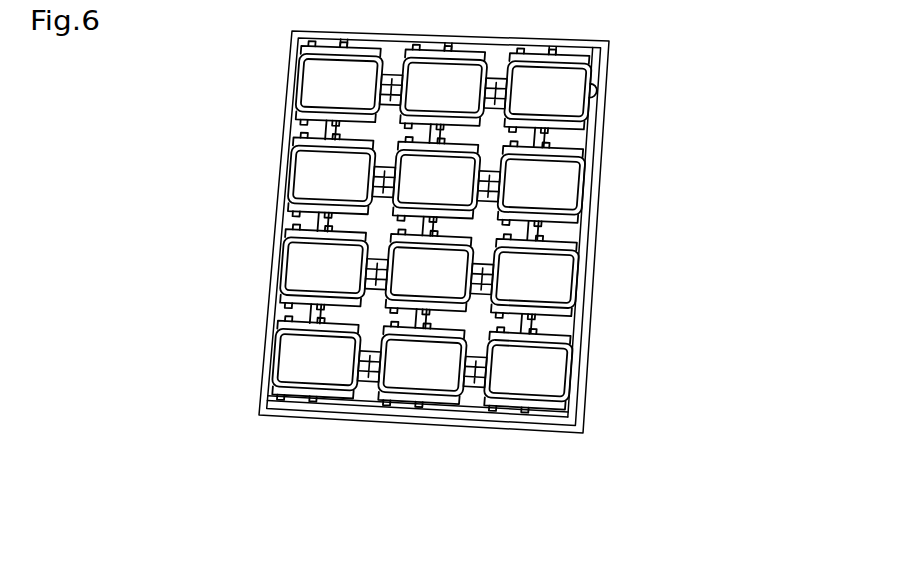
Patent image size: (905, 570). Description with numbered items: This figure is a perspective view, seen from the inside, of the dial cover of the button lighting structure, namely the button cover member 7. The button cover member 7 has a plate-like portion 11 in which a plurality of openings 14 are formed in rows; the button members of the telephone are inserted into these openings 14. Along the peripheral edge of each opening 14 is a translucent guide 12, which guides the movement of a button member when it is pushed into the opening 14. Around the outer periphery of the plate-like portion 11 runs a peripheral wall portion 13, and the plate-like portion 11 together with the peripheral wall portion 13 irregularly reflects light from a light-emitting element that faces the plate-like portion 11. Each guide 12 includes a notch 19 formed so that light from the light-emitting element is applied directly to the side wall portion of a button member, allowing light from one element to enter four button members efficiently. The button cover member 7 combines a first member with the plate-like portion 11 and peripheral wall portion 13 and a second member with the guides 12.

The button cover member 7 is at (508, 282).
The plate-like portion 11 is at (570, 143).
The translucent guide 12 is at (540, 407).
The peripheral wall portion 13 is at (588, 213).
The opening 14 is at (585, 85).
The notch 19 is at (352, 333).